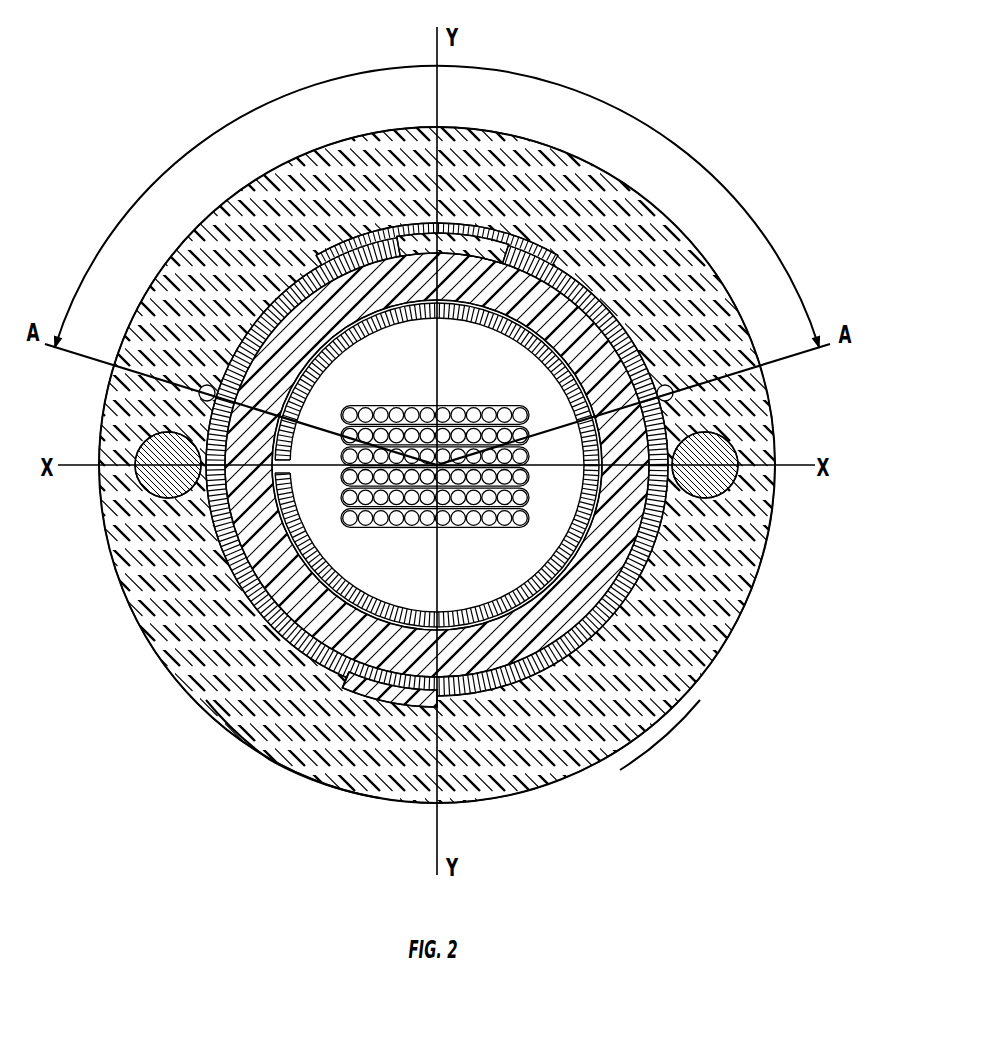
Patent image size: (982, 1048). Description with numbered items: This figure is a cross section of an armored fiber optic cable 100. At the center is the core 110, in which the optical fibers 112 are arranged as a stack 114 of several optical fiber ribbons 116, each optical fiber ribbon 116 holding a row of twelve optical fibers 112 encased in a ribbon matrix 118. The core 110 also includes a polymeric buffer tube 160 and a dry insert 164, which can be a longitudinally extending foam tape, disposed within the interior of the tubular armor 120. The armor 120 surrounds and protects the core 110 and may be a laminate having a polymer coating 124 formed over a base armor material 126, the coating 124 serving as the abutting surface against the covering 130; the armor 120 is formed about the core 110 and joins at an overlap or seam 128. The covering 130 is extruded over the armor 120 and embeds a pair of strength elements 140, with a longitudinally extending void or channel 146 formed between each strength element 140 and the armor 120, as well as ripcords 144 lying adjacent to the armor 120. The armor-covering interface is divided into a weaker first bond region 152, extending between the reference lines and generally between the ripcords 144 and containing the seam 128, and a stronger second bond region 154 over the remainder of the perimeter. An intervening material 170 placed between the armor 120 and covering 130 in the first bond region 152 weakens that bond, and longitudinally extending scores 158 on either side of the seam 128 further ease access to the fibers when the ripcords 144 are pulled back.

The cable 100 is at (202, 68).
The core 110 is at (402, 684).
The optical fibers 112 is at (503, 408).
The stack 114 is at (513, 540).
The optical fiber ribbon 116 is at (341, 489).
The ribbon matrix 118 is at (375, 407).
The armor 120 is at (233, 590).
The coating 124 is at (645, 597).
The base armor material 126 is at (660, 650).
The seam 128 is at (407, 218).
The covering 130 is at (248, 680).
The strength elements 140 is at (150, 442).
The ripcords 144 is at (207, 386).
The void or channel 146 is at (668, 392).
The first bond region 152 is at (545, 214).
The second bond region 154 is at (353, 697).
The scores 158 is at (213, 380).
The buffer tube 160 is at (520, 650).
The dry insert 164 is at (590, 505).
The intervening material 170 is at (352, 233).